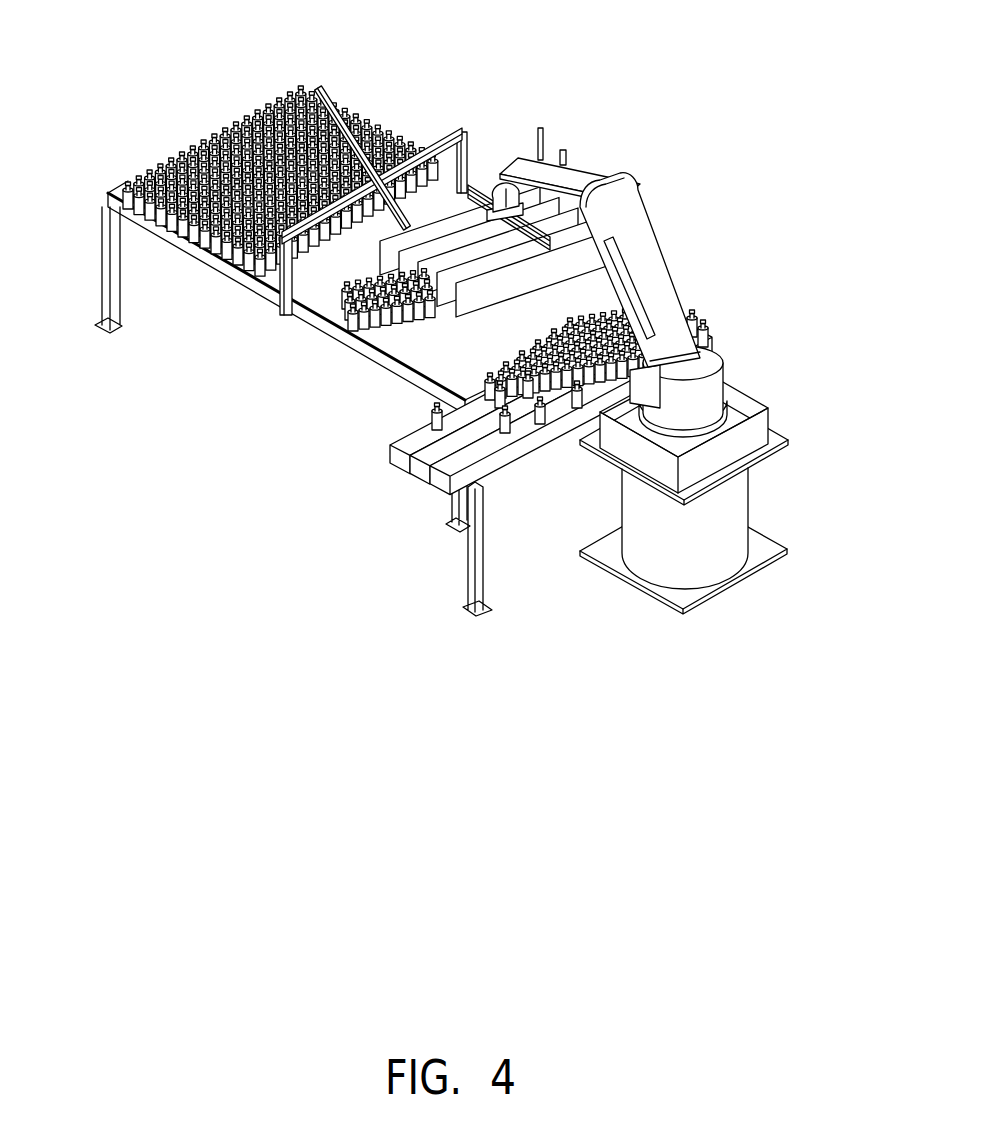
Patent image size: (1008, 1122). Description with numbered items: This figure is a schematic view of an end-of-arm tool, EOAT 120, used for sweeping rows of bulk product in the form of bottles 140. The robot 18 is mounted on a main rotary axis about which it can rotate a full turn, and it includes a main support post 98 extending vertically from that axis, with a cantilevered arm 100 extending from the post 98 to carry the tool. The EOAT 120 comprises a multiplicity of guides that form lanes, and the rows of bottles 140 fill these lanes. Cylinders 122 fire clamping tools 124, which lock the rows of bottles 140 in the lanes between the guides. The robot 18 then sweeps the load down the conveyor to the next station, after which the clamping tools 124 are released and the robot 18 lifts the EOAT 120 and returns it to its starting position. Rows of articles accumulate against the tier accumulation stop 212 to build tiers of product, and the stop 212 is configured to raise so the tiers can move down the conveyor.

The robot 18 is at (740, 397).
The main support post 98 is at (635, 243).
The cantilevered arm 100 is at (558, 160).
The EOAT 120 is at (545, 148).
The cylinders 122 is at (503, 180).
The clamping tools 124 is at (493, 217).
The bulk product (bottles) 140 is at (217, 122).
The tier accumulation stop 212 is at (337, 100).